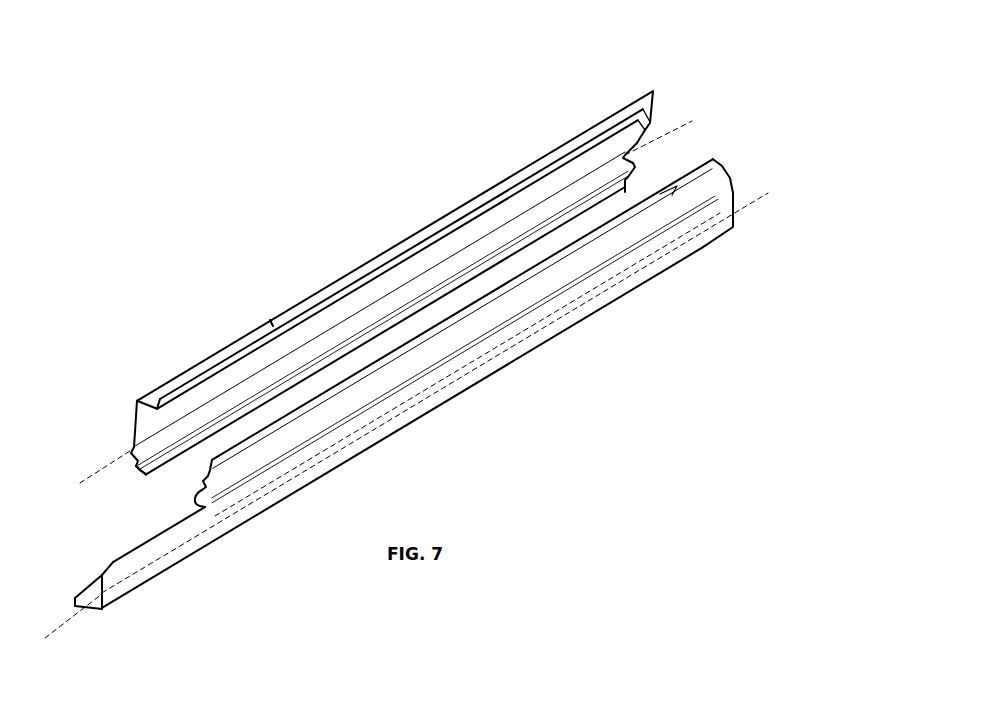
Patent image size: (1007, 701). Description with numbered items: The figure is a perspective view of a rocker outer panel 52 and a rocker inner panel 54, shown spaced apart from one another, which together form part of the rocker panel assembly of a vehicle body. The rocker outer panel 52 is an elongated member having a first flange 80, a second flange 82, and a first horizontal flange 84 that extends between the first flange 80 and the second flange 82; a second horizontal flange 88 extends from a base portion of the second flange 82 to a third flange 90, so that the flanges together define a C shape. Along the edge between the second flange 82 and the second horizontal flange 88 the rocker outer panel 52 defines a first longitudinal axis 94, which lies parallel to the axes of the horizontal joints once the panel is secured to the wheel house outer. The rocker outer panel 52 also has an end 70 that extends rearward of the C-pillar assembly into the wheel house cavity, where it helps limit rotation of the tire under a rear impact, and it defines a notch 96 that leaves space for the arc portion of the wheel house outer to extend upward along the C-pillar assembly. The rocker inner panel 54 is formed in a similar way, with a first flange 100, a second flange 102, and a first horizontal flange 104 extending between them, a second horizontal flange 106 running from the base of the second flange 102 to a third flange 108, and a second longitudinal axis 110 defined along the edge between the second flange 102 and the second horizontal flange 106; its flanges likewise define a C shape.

The rocker outer panel 52 is at (713, 161).
The rocker inner panel 54 is at (653, 93).
The end 70 is at (114, 600).
The first flange 80 is at (675, 197).
The second flange 82 is at (734, 212).
The first horizontal flange 84 is at (722, 184).
The second horizontal flange 88 is at (94, 596).
The third flange 90 is at (72, 598).
The first longitudinal axis 94 is at (64, 628).
The notch 96 is at (194, 500).
The first flange 100 is at (190, 384).
The second flange 102 is at (134, 418).
The first horizontal flange 104 is at (156, 402).
The second horizontal flange 106 is at (130, 456).
The third flange 108 is at (141, 476).
The second longitudinal axis 110 is at (108, 466).